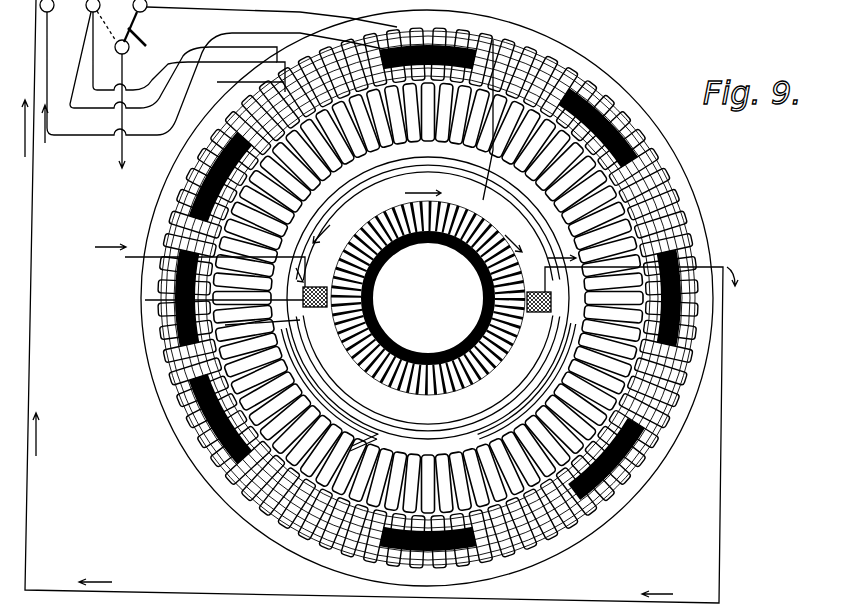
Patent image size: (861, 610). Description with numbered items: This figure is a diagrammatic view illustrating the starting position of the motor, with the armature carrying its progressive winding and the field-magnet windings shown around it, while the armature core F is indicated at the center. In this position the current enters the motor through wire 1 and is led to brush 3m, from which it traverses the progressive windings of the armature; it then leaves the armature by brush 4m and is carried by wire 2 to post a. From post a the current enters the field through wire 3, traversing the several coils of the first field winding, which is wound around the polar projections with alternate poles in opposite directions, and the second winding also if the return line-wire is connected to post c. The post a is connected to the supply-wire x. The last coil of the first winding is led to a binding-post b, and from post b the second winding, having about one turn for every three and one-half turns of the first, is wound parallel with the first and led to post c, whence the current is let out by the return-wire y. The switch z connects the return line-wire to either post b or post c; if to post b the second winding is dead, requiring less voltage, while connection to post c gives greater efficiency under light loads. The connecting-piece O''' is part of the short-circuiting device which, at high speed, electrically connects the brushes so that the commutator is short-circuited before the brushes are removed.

The wire 1 is at (200, 265).
The wire 2 is at (389, 301).
The wire 3 is at (49, 70).
The brush 3m is at (317, 288).
The brush 4m is at (540, 320).
The armature (rotor) core F is at (428, 298).
The connecting-piece O''' is at (428, 308).
The post a is at (214, 71).
The binding-post b is at (177, 54).
The post c is at (260, 21).
The supply-wire x is at (24, 138).
The return-wire y is at (120, 117).
The switch z is at (143, 40).